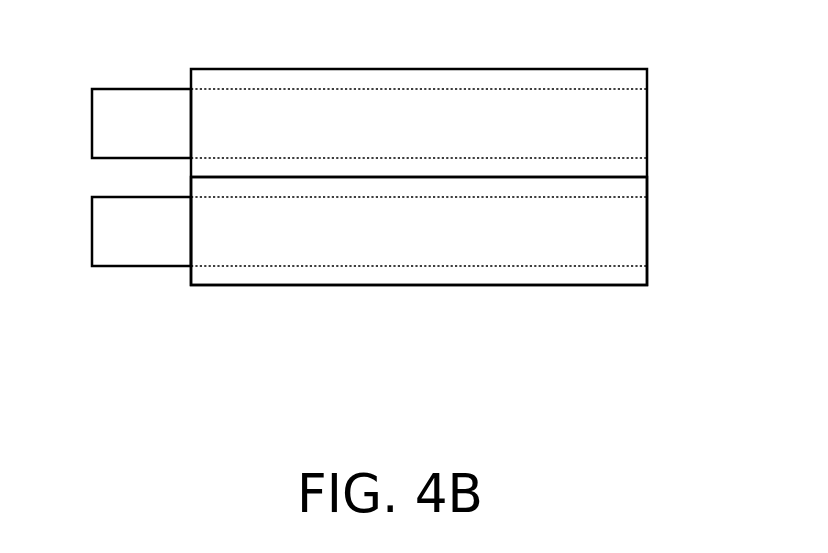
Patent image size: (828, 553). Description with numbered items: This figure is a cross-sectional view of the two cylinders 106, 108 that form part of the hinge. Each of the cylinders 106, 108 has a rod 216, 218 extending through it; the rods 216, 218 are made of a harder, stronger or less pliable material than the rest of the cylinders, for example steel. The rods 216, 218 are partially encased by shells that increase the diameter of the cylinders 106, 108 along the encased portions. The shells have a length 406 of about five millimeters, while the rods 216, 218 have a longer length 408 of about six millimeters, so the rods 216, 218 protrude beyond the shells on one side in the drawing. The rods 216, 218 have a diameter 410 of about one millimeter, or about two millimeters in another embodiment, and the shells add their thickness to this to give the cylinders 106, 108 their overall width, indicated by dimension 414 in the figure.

The cylinder 106 is at (647, 275).
The cylinder 108 is at (520, 69).
The rod 216 is at (133, 267).
The rod 218 is at (152, 89).
The length of the shells 406 is at (647, 344).
The length of the rods 408 is at (92, 377).
The diameter of the rods 410 is at (42, 89).
The layer height 414 is at (673, 70).